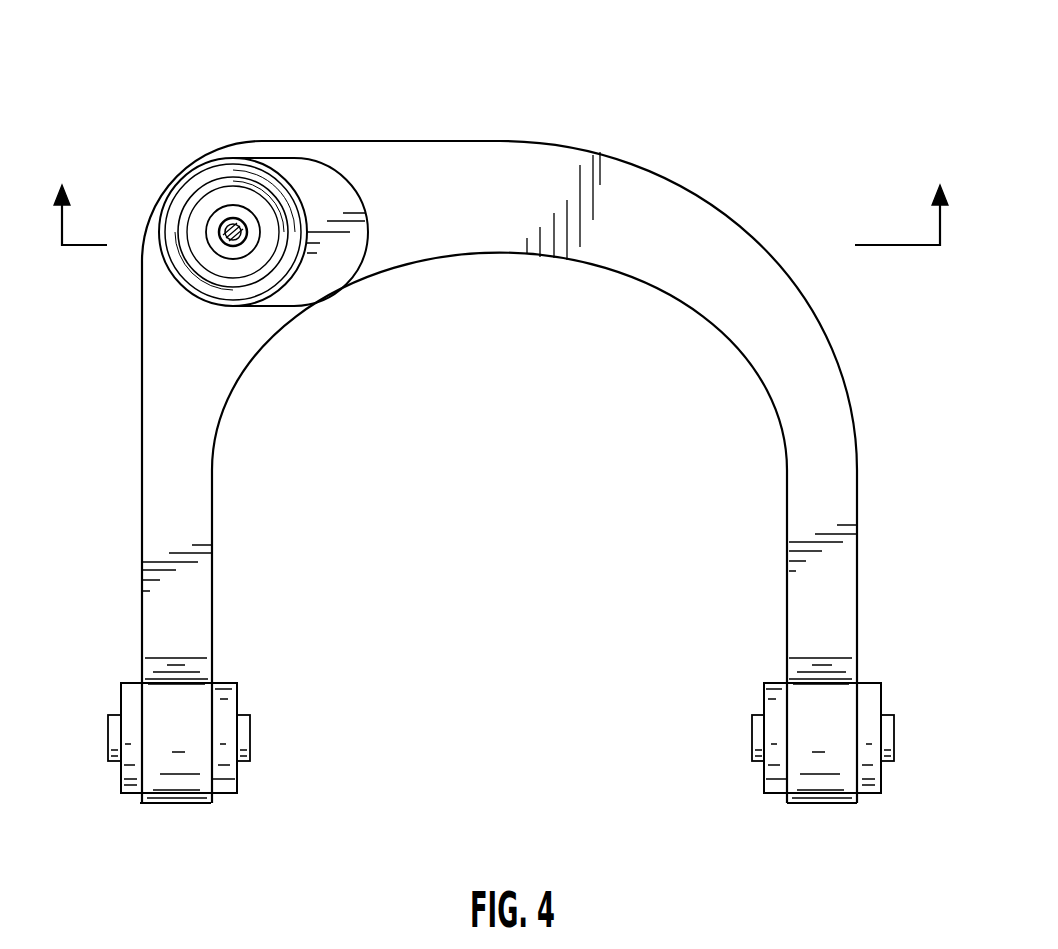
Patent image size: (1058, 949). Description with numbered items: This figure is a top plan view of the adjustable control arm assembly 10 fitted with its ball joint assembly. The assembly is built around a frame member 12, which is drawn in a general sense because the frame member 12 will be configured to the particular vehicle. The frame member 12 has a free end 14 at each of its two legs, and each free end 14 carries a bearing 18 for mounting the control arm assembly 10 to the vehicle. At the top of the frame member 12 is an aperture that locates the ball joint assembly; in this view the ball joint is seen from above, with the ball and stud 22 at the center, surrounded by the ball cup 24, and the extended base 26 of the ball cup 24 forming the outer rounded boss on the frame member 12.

The control arm assembly 10 is at (499, 190).
The frame member 12 is at (650, 247).
The free end 14 is at (175, 793).
The bearing 18 is at (225, 706).
The ball and stud 22 is at (226, 232).
The ball cup 24 is at (206, 172).
The extended base 26 is at (310, 177).